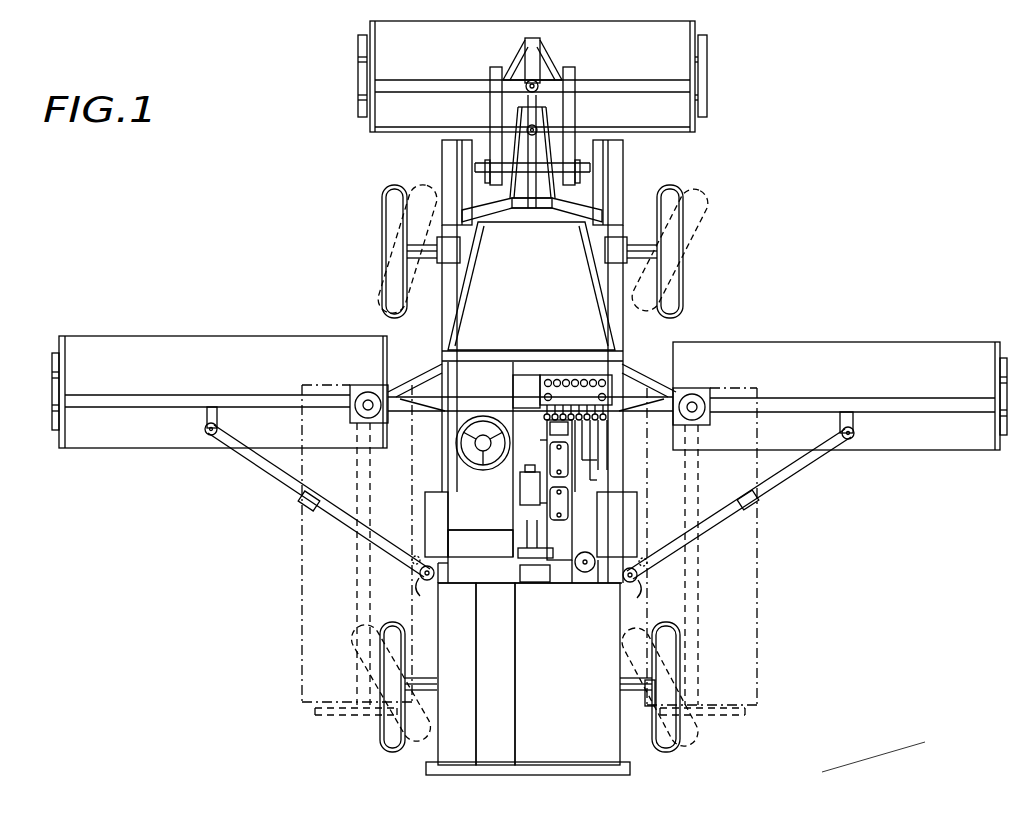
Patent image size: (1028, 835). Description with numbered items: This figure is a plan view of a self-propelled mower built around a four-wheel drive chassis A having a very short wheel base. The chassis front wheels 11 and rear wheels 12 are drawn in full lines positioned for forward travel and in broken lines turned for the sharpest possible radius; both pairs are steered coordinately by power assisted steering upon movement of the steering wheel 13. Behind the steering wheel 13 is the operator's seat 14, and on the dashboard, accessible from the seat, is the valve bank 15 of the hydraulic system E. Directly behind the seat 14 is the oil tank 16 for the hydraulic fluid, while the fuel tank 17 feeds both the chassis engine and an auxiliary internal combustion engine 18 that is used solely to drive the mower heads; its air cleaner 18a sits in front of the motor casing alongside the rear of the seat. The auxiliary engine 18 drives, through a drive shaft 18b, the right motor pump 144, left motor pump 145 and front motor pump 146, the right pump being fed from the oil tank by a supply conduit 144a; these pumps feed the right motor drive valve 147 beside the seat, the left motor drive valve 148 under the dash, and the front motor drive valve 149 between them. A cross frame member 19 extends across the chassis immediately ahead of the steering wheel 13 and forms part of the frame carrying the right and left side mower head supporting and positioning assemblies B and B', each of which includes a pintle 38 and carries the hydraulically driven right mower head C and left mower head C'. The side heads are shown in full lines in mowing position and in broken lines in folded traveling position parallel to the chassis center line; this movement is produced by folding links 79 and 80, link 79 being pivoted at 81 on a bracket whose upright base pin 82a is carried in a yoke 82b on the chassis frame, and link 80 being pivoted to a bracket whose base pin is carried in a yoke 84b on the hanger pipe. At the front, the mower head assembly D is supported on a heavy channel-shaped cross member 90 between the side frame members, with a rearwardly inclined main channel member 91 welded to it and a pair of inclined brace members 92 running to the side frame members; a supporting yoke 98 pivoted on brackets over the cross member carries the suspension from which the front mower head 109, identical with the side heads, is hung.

The mower head 109 is at (712, 32).
The supporting yoke 98 is at (490, 116).
The channel-shaped cross member 90 is at (578, 160).
The main channel member 91 is at (533, 209).
The inclined brace members 92 is at (500, 213).
The front wheels 11 is at (380, 215).
The rear wheels 12 is at (390, 622).
The steering wheel 13 is at (484, 424).
The seat 14 is at (469, 524).
The valve bank 15 is at (570, 375).
The oil tank 16 is at (457, 674).
The fuel tank 17 is at (495, 674).
The auxiliary internal combustion engine 18 is at (567, 674).
The air cleaner 18a is at (564, 636).
The drive shaft 18b is at (550, 577).
The cross frame member 19 is at (512, 421).
The pintle 38 is at (362, 410).
The folding link 79 is at (318, 522).
The folding link 80 is at (870, 470).
The pivot 81 is at (577, 586).
The upright base pin 82a is at (420, 580).
The yoke 82b is at (413, 556).
The yoke 84b is at (207, 424).
The right motor pump 144 is at (545, 538).
The supply conduit 144a is at (478, 582).
The left motor pump 145 is at (540, 503).
The front motor pump 146 is at (520, 515).
The right motor drive valve 147 is at (575, 496).
The left motor drive valve 148 is at (545, 434).
The front motor drive valve 149 is at (547, 455).
The chassis A is at (714, 228).
The right side mower head supporting and positioning assembly B is at (661, 378).
The left side mower head supporting and positioning assembly B' is at (416, 367).
The right mower head C is at (827, 503).
The left mower head C' is at (232, 494).
The front mower head assembly D is at (366, 72).
The hydraulic system E is at (546, 374).